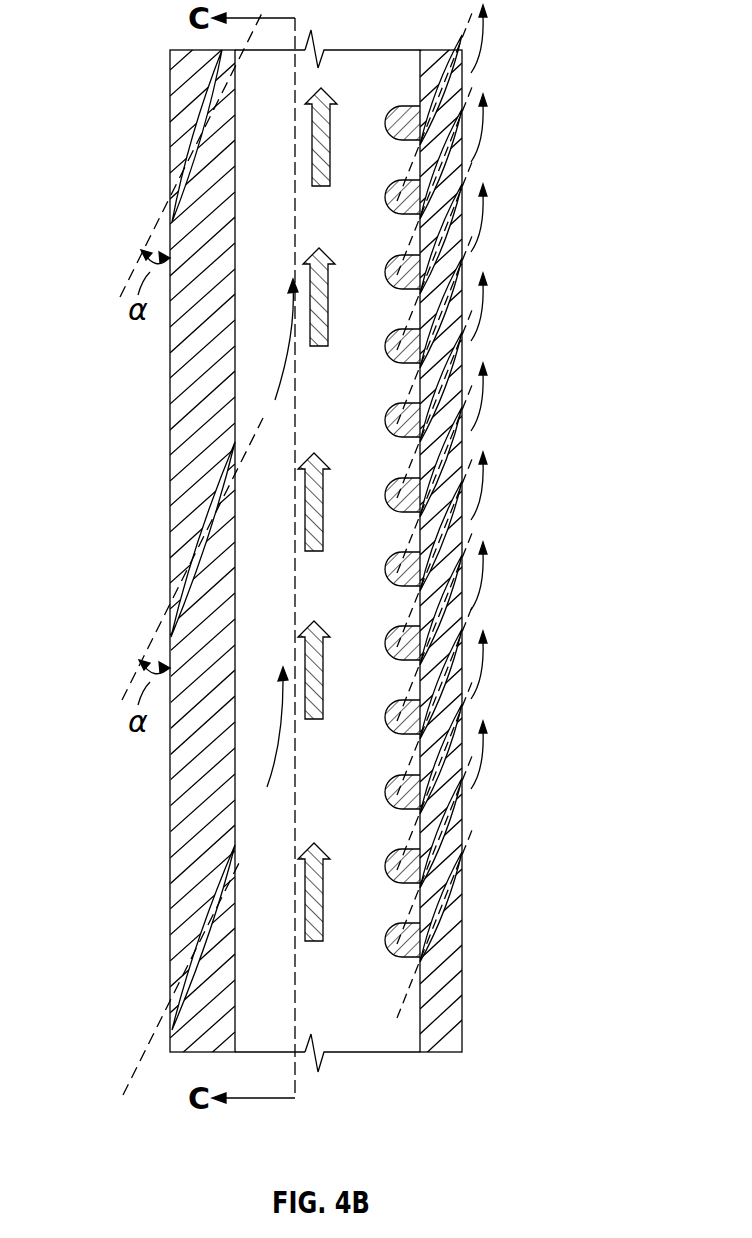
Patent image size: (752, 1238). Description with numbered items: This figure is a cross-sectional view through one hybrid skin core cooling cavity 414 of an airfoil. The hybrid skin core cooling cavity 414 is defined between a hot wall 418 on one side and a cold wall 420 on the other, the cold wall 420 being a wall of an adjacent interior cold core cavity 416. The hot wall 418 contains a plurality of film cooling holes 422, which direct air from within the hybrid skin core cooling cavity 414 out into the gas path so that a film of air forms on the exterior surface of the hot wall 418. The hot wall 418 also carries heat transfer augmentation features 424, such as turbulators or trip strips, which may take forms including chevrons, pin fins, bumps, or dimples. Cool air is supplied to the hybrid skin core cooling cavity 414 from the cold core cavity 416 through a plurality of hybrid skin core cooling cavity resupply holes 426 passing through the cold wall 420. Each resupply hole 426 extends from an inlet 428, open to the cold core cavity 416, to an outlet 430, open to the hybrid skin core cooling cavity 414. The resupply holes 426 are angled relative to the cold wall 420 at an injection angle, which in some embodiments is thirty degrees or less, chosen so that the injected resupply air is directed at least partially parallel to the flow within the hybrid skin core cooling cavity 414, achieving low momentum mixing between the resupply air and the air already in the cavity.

The hybrid skin core cooling cavity 414 is at (350, 796).
The cold core cavity 416 is at (122, 768).
The hot wall 418 is at (443, 1048).
The cold wall 420 is at (220, 1048).
The film cooling hole 422 is at (472, 343).
The heat transfer augmentation feature 424 is at (400, 120).
The hybrid skin core cooling cavity resupply hole 426 is at (192, 124).
The inlet 428 is at (172, 185).
The outlet 430 is at (236, 495).